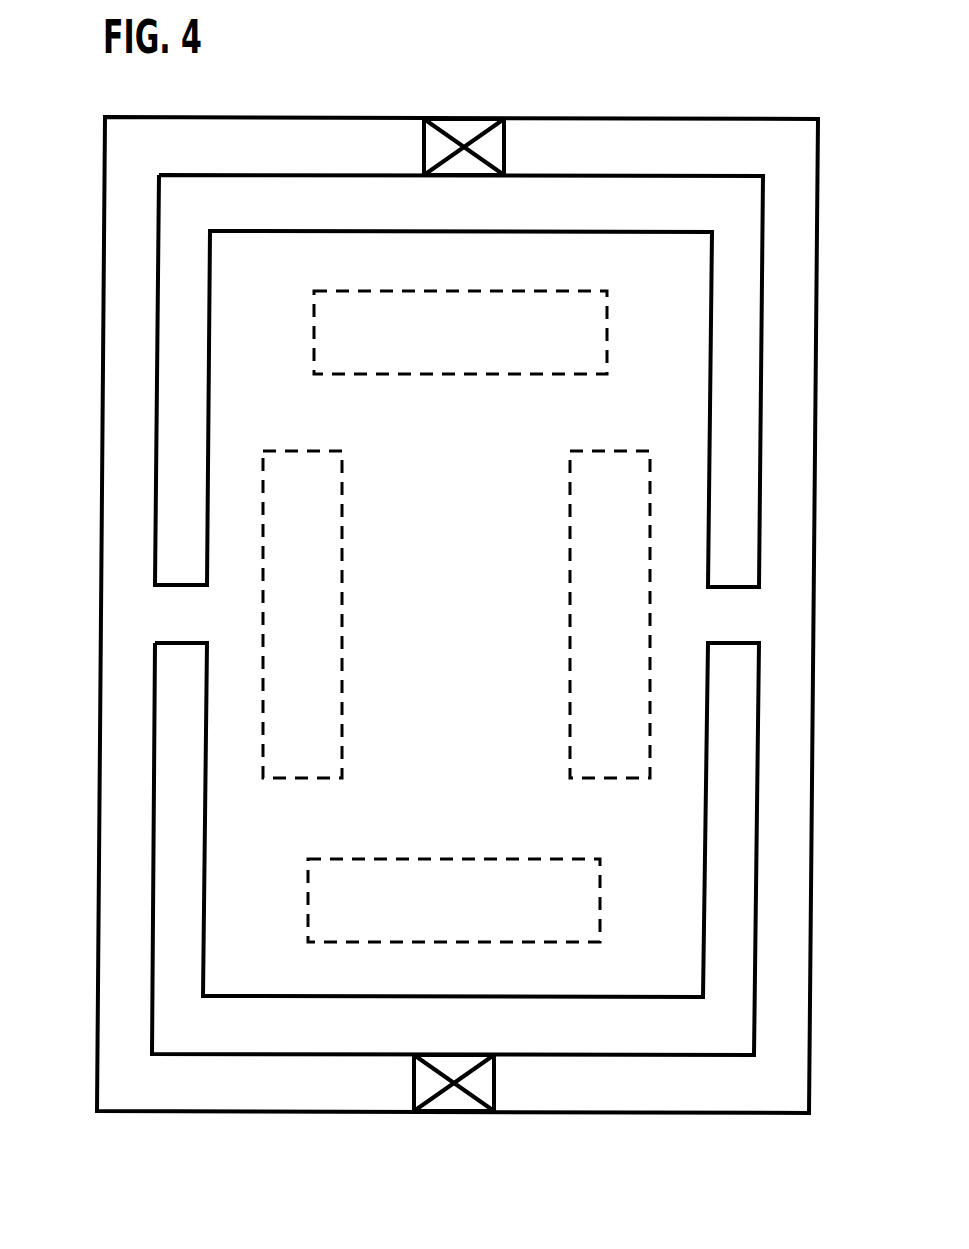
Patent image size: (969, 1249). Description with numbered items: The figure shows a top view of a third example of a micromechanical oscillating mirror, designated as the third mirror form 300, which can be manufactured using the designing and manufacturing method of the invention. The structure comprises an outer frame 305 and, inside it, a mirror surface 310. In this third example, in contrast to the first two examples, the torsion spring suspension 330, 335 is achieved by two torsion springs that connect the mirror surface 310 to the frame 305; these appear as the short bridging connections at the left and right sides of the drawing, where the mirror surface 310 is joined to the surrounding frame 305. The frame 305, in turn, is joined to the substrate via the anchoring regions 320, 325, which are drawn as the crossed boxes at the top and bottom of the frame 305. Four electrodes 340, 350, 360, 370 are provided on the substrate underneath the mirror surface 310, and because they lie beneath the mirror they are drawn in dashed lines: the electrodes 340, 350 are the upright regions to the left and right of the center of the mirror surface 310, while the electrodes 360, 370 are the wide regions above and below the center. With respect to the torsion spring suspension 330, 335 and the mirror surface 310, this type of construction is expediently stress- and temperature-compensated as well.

The third mirror form 300 is at (713, 112).
The frame 305 is at (326, 117).
The mirror surface 310 is at (477, 634).
The anchoring region 320 is at (453, 1102).
The anchoring region 325 is at (462, 120).
The torsion spring suspension 330 is at (745, 612).
The torsion spring suspension 335 is at (168, 613).
The electrode 340 is at (335, 491).
The electrode 350 is at (578, 722).
The electrode 360 is at (461, 367).
The electrode 370 is at (453, 866).